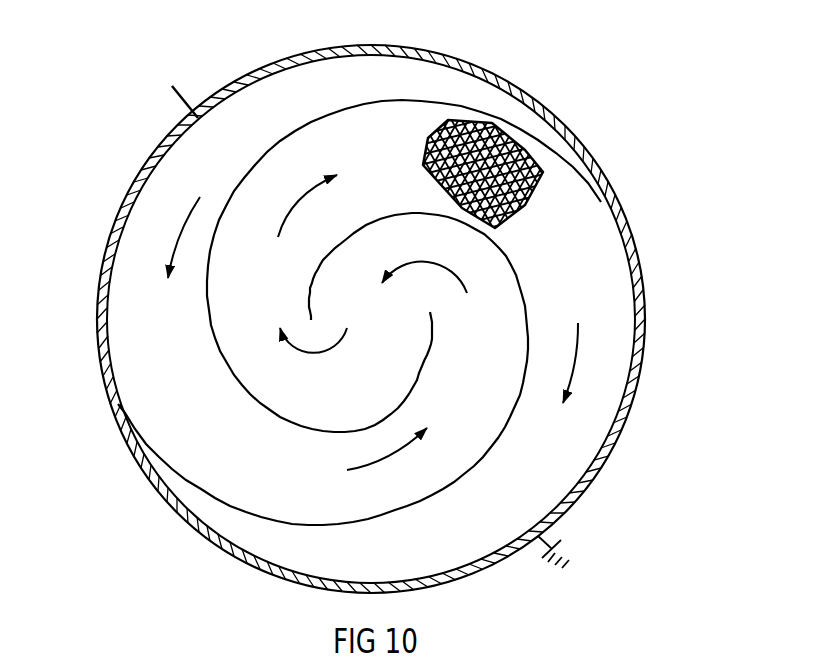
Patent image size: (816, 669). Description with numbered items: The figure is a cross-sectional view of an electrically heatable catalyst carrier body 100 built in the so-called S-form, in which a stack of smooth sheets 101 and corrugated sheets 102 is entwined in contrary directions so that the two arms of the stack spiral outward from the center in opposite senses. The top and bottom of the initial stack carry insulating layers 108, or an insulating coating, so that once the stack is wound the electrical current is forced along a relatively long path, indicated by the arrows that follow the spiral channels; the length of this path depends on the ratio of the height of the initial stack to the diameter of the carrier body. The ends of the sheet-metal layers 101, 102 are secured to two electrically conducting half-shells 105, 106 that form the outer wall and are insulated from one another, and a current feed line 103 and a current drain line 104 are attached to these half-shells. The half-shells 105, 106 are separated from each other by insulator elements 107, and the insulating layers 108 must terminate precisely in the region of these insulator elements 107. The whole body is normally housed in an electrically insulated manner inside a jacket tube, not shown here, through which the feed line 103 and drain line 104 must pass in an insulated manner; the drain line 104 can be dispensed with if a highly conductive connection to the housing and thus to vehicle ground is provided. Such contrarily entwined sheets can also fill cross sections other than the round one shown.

The catalyst carrier body 100 is at (464, 86).
The smooth sheets 101 is at (533, 147).
The corrugated sheets 102 is at (512, 132).
The current feed line 103 is at (182, 100).
The current drain line 104 is at (577, 528).
The half-shell 105 is at (299, 60).
The half-shell 106 is at (641, 337).
The insulator elements 107 is at (619, 211).
The insulating layers 108 is at (167, 463).